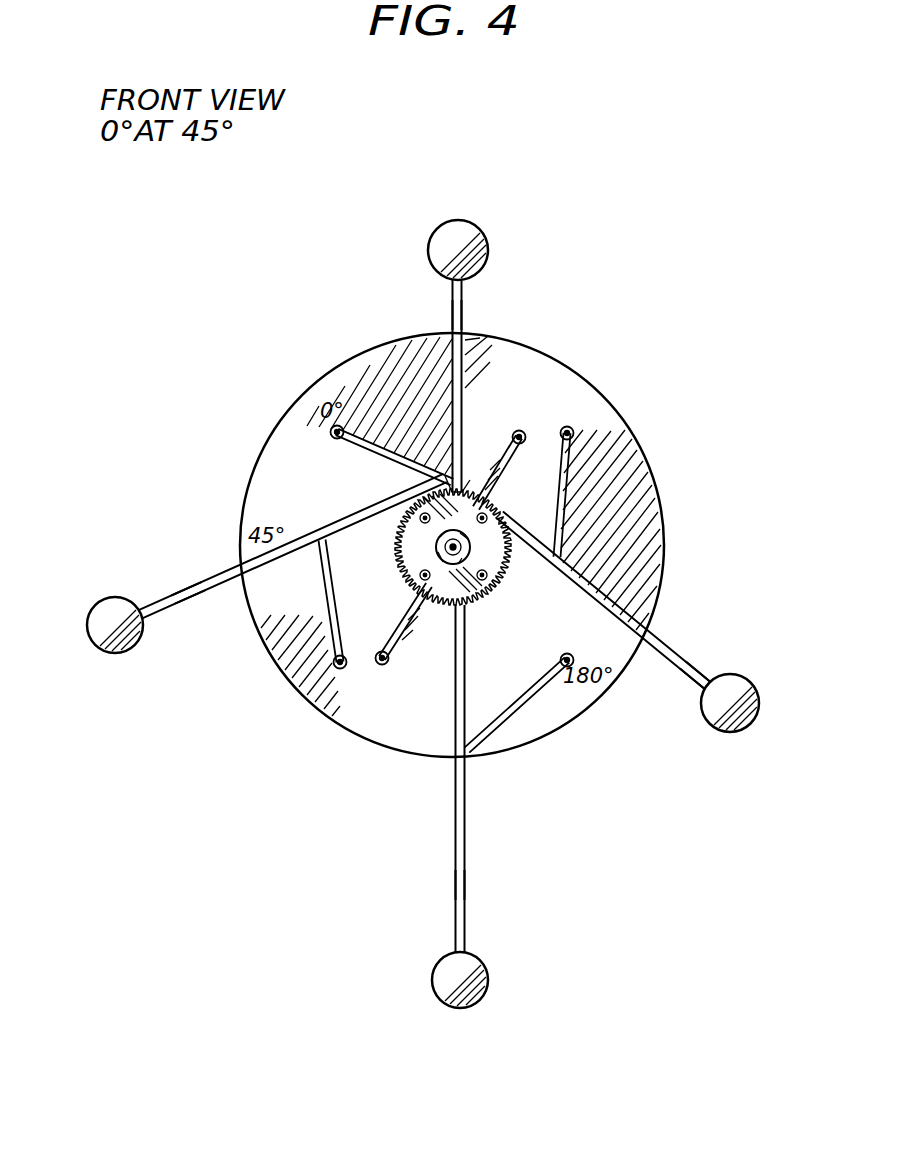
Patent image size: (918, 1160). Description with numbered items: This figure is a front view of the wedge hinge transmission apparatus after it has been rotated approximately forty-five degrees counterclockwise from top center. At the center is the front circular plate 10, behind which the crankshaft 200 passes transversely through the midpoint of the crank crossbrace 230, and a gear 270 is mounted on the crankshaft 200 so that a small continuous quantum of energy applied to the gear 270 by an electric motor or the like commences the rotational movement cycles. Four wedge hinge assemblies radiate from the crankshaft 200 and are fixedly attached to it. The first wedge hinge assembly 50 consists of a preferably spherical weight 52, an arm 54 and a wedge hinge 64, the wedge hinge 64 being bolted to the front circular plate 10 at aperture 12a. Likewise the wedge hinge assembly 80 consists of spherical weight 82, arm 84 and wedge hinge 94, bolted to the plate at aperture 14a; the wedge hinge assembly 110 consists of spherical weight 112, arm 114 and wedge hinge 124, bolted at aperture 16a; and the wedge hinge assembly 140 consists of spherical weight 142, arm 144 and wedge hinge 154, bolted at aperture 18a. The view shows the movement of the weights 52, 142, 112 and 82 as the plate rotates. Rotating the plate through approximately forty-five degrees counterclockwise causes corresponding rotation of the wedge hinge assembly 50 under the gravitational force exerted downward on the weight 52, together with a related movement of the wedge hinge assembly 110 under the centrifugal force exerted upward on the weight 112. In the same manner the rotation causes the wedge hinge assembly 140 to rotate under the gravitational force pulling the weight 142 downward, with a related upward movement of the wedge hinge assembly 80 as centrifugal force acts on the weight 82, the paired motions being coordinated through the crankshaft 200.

The front circular plate 10 is at (594, 378).
The aperture 12a is at (337, 440).
The aperture 14a is at (574, 432).
The aperture 16a is at (568, 654).
The aperture 18a is at (346, 668).
The wedge hinge assembly 50 is at (475, 302).
The spherical weight 52 is at (485, 235).
The arm 54 is at (452, 316).
The wedge hinge 64 is at (380, 450).
The wedge hinge assembly 80 is at (680, 648).
The spherical weight 82 is at (755, 725).
The arm 84 is at (698, 688).
The wedge hinge 94 is at (567, 520).
The wedge hinge assembly 110 is at (470, 848).
The spherical weight 112 is at (485, 1002).
The arm 114 is at (455, 890).
The wedge hinge 124 is at (522, 710).
The wedge hinge assembly 140 is at (178, 597).
The spherical weight 142 is at (90, 608).
The arm 144 is at (196, 586).
The wedge hinge 154 is at (313, 610).
The crankshaft 200 is at (436, 547).
The crank crossbrace 230 is at (490, 455).
The gear 270 is at (500, 575).